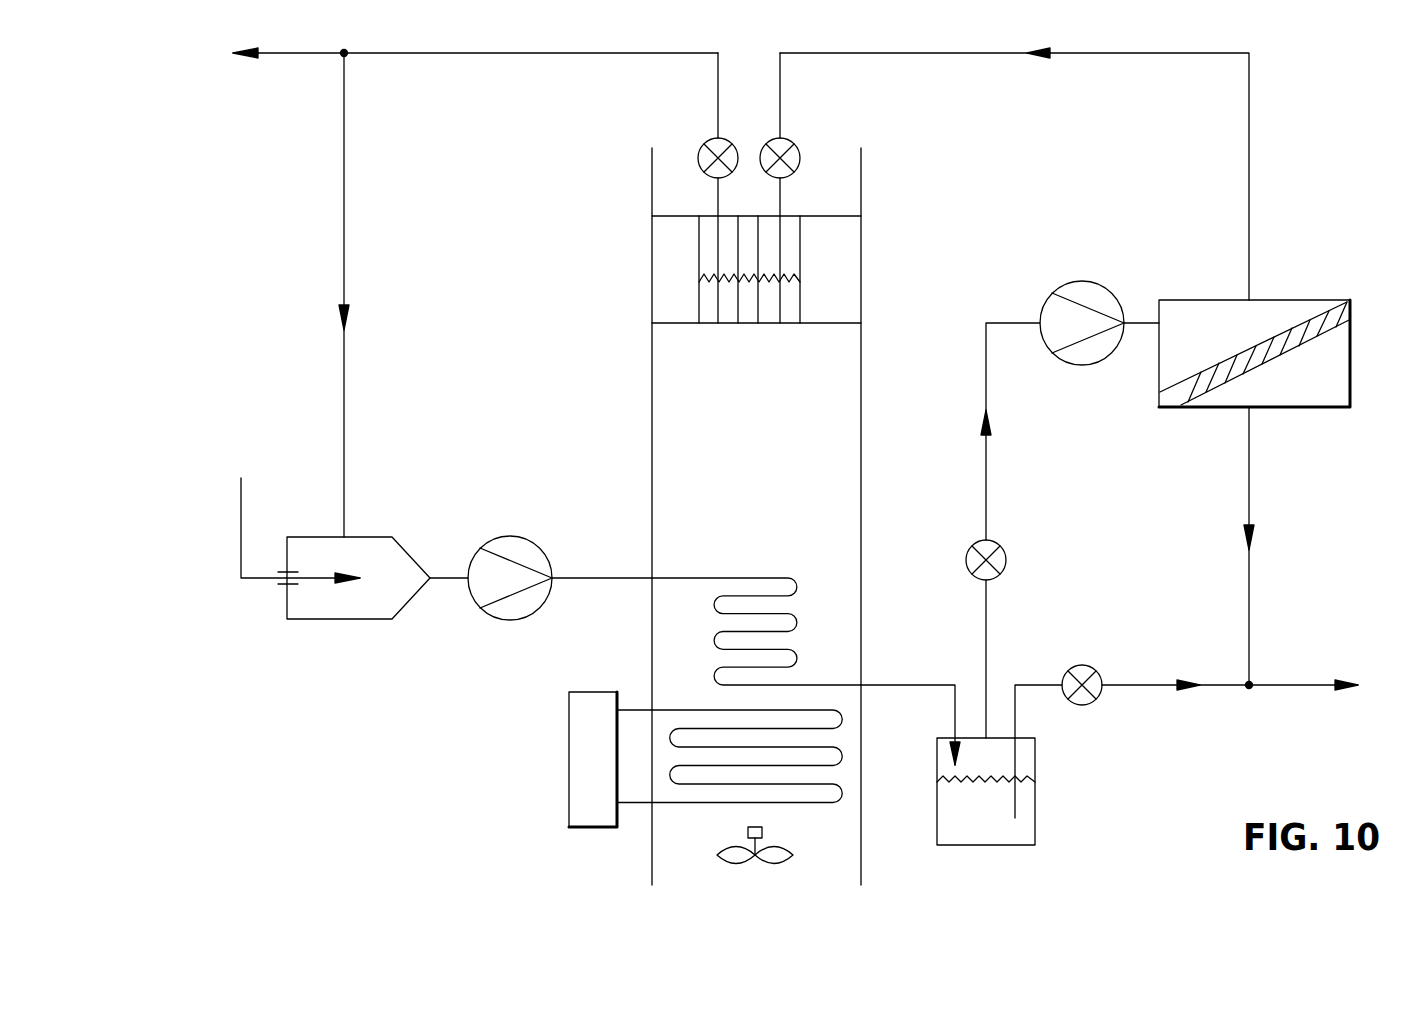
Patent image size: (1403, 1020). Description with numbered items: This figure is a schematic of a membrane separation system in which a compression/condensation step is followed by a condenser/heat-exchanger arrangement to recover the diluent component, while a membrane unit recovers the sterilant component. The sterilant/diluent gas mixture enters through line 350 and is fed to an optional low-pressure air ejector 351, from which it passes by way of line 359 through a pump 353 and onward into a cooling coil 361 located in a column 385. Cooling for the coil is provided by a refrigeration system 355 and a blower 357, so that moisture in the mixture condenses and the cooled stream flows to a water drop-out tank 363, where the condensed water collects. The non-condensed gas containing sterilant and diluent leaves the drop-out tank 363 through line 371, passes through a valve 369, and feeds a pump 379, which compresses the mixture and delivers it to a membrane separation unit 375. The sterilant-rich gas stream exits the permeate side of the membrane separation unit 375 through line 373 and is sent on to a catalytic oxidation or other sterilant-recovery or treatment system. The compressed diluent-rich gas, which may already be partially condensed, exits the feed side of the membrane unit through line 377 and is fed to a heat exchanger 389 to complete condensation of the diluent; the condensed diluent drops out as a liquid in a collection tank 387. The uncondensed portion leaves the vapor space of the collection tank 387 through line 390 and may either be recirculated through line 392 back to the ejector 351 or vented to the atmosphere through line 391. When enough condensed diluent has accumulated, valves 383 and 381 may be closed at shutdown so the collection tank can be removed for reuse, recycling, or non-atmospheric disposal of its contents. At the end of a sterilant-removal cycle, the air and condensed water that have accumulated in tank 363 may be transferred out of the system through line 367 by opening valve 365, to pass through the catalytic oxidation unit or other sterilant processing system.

The line 350 is at (241, 505).
The low-pressure air ejector 351 is at (327, 619).
The feed pump 353 is at (505, 535).
The refrigeration system 355 is at (569, 742).
The blower 357 is at (727, 865).
The line 359 is at (582, 578).
The cooling coil 361 is at (714, 603).
The water drop-out tank 363 is at (1035, 808).
The valve 365 is at (1078, 657).
The line 367 is at (1122, 685).
The valve 369 is at (1000, 544).
The line 371 is at (986, 323).
The line 373 is at (1249, 508).
The membrane separation unit 375 is at (1295, 300).
The line 377 is at (1160, 53).
The pump 379 is at (1082, 281).
The valve 381 is at (782, 137).
The valve 383 is at (712, 138).
The column 385 is at (861, 423).
The collection tank 387 is at (748, 323).
The heat exchanger 389 is at (800, 247).
The line 390 is at (503, 53).
The line 391 is at (305, 53).
The line 392 is at (344, 183).